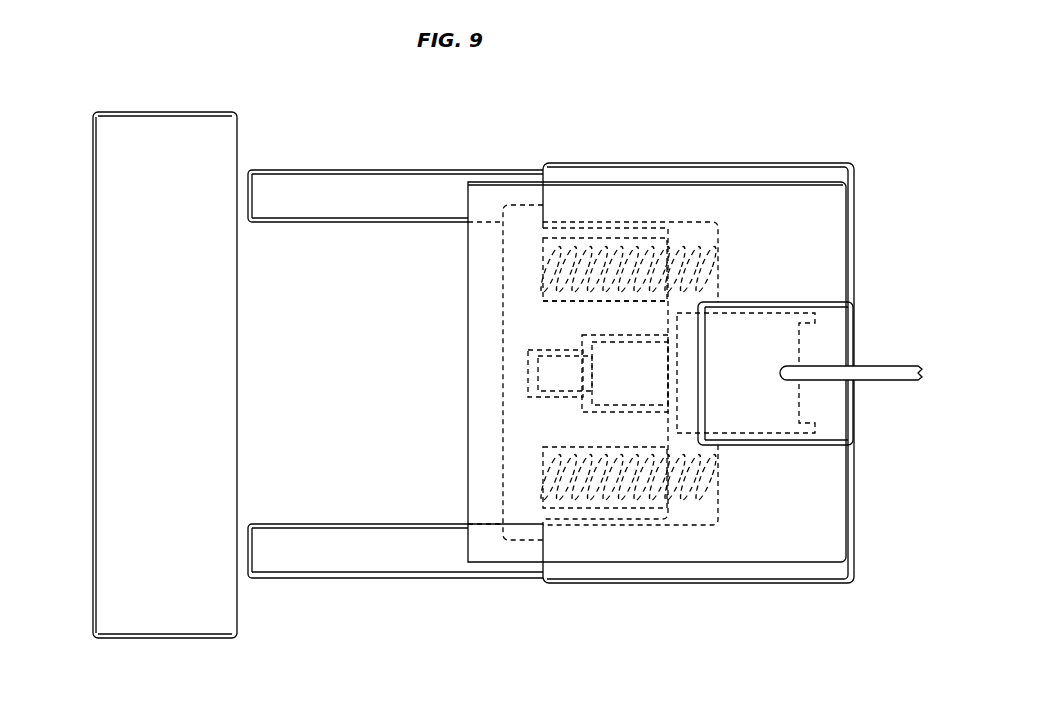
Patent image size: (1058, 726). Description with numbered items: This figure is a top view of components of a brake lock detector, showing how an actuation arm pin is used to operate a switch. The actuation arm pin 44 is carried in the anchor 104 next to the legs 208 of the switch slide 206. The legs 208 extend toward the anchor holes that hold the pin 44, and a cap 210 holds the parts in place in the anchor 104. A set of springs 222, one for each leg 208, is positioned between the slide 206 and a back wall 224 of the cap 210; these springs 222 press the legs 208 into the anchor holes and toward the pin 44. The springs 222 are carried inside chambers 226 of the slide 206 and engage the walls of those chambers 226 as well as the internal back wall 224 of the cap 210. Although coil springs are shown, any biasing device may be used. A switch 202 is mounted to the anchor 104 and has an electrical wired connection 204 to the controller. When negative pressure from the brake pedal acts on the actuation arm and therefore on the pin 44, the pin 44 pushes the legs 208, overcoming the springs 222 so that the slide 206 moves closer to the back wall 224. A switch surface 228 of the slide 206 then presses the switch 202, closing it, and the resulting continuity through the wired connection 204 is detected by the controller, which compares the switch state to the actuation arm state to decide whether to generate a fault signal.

The pin 44 is at (108, 217).
The anchor 104 is at (670, 334).
The switch 202 is at (800, 397).
The electrical wired connection 204 is at (887, 364).
The switch slide 206 is at (503, 272).
The legs 208 is at (367, 187).
The cap 210 is at (673, 170).
The springs 222 is at (714, 246).
The back wall 224 is at (718, 252).
The chambers 226 is at (577, 303).
The switch surface 228 is at (528, 375).